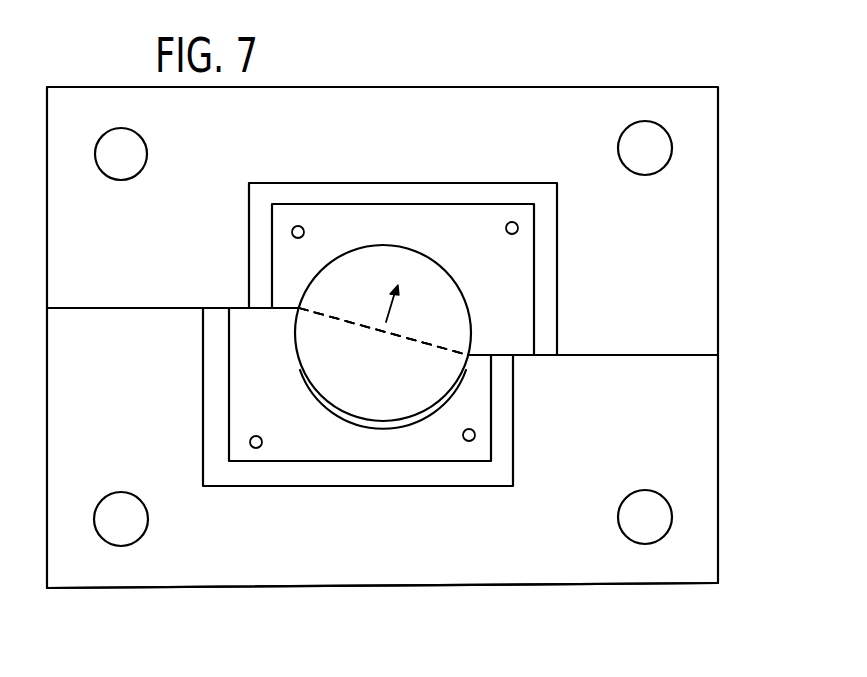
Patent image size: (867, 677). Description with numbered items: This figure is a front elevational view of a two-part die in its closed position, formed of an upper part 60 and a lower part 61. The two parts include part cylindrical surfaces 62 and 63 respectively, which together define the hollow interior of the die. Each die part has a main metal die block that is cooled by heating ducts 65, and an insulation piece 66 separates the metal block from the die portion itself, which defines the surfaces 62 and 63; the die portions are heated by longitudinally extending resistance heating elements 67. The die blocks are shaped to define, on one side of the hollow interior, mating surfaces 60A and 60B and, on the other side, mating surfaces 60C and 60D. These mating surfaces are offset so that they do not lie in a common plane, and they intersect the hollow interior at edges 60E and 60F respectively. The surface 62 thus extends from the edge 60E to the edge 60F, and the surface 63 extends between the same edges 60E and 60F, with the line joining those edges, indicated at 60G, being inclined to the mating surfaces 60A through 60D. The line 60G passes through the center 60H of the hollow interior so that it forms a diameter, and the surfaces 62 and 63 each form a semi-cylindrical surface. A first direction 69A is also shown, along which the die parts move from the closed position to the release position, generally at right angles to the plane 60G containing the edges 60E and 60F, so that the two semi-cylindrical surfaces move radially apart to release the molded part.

The upper part 60 is at (590, 97).
The lower part 61 is at (542, 558).
The mating surface 60A is at (73, 307).
The mating surface 60B is at (105, 312).
The mating surface 60C is at (680, 354).
The mating surface 60D is at (722, 361).
The edge 60E is at (305, 311).
The edge 60F is at (462, 393).
The line joining the edges 60G is at (412, 342).
The center of the hollow interior 60H is at (381, 334).
The part cylindrical surface 62 is at (473, 318).
The part cylindrical surface 63 is at (395, 421).
The heating ducts 65 is at (668, 152).
The insulation piece 66 is at (444, 220).
The resistance heating elements 67 is at (513, 222).
The first direction 69A is at (392, 290).